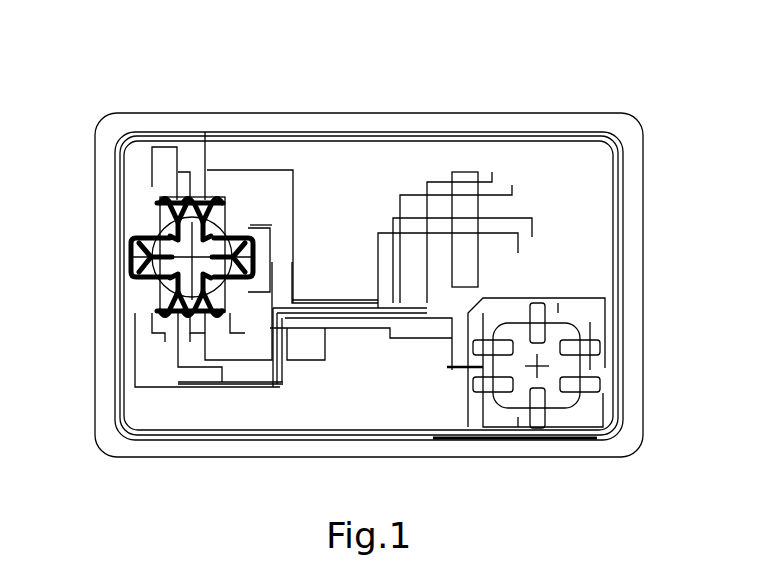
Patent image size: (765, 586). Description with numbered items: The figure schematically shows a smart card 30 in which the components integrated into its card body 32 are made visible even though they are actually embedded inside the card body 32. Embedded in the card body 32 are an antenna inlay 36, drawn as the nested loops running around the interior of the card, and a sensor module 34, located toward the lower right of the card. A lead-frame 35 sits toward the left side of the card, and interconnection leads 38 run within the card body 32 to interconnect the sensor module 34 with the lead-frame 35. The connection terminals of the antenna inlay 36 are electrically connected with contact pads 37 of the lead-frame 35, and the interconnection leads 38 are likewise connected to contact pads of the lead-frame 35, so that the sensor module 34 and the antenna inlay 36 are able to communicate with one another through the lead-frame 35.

The smart card 30 is at (232, 86).
The card body 32 is at (643, 193).
The sensor module 34 is at (590, 293).
The lead-frame 35 is at (150, 291).
The antenna inlay 36 is at (333, 137).
The contact pads 37 is at (160, 212).
The interconnection leads 38 is at (358, 317).